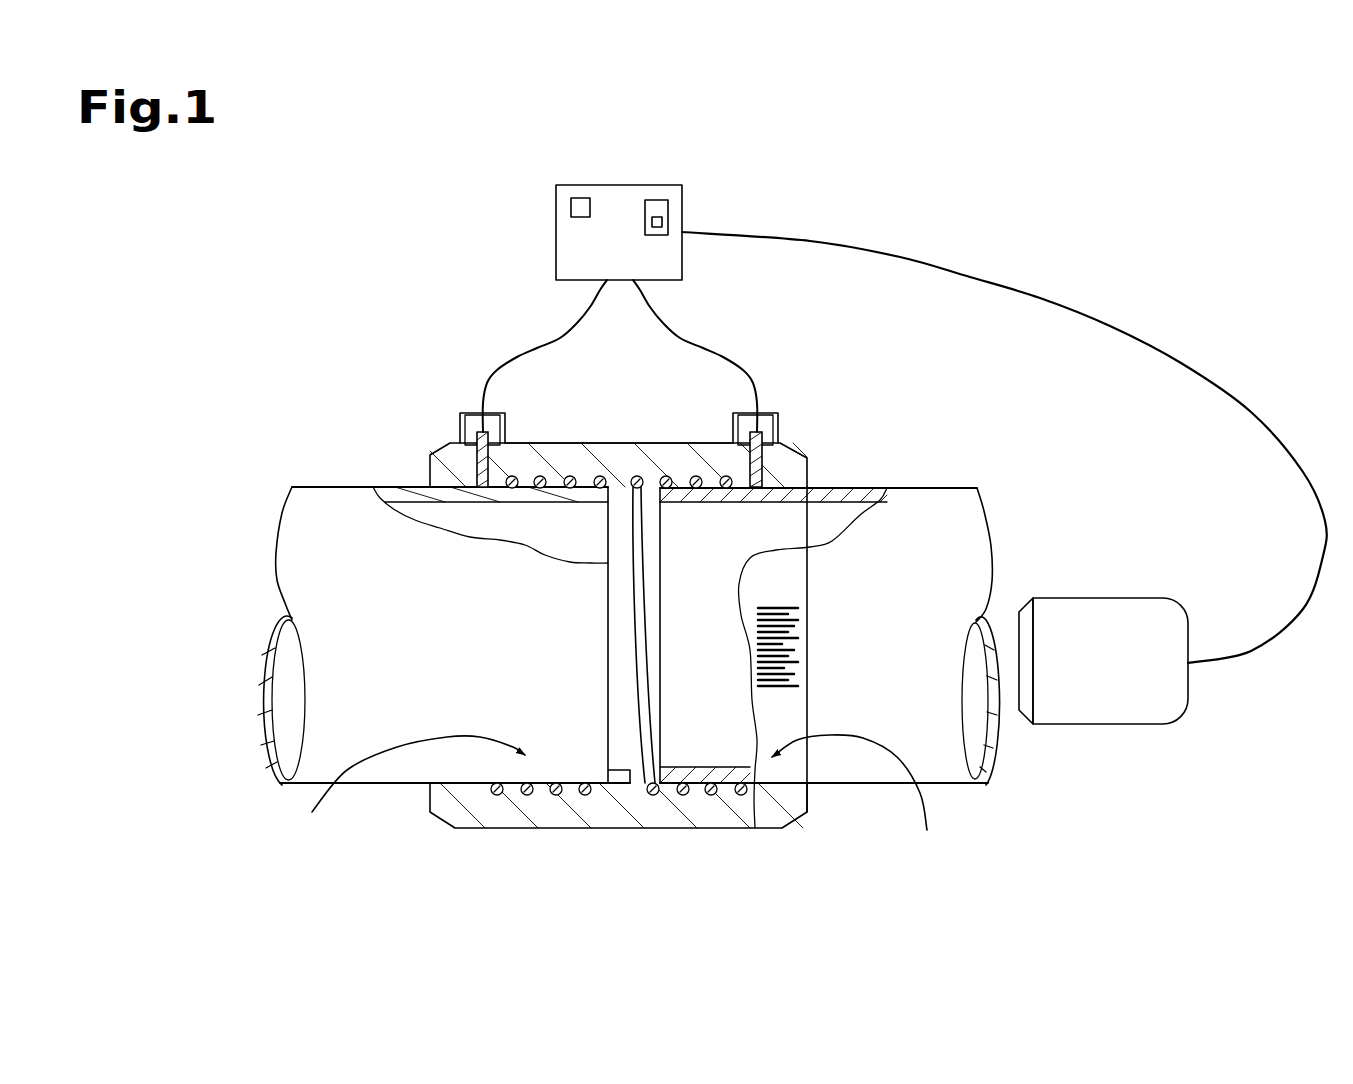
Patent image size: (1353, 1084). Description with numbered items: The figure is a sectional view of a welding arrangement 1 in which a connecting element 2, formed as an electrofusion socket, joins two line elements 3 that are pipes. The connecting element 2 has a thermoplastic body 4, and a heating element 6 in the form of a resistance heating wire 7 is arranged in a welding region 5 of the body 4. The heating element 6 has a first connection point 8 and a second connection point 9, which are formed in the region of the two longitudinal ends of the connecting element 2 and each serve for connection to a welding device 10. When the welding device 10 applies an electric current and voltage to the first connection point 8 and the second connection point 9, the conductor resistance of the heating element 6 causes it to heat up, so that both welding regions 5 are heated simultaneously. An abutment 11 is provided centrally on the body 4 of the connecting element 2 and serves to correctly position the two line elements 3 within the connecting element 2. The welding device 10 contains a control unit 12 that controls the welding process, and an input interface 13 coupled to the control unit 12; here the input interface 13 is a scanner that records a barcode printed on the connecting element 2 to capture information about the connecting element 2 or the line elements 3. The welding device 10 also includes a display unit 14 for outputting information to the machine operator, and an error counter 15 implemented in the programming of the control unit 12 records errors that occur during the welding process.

The welding arrangement 1 is at (1020, 248).
The connecting element 2 is at (620, 412).
The line elements 3 is at (293, 466).
The thermoplastic body 4 is at (790, 447).
The welding region 5 is at (613, 802).
The heating element 6 is at (734, 806).
The resistance heating wire 7 is at (683, 797).
The first connection point 8 is at (763, 398).
The second connection point 9 is at (475, 398).
The welding device 10 is at (634, 258).
The abutment 11 is at (620, 777).
The control unit 12 is at (660, 208).
The input interface 13 is at (1172, 762).
The display unit 14 is at (580, 203).
The error counter 15 is at (662, 220).